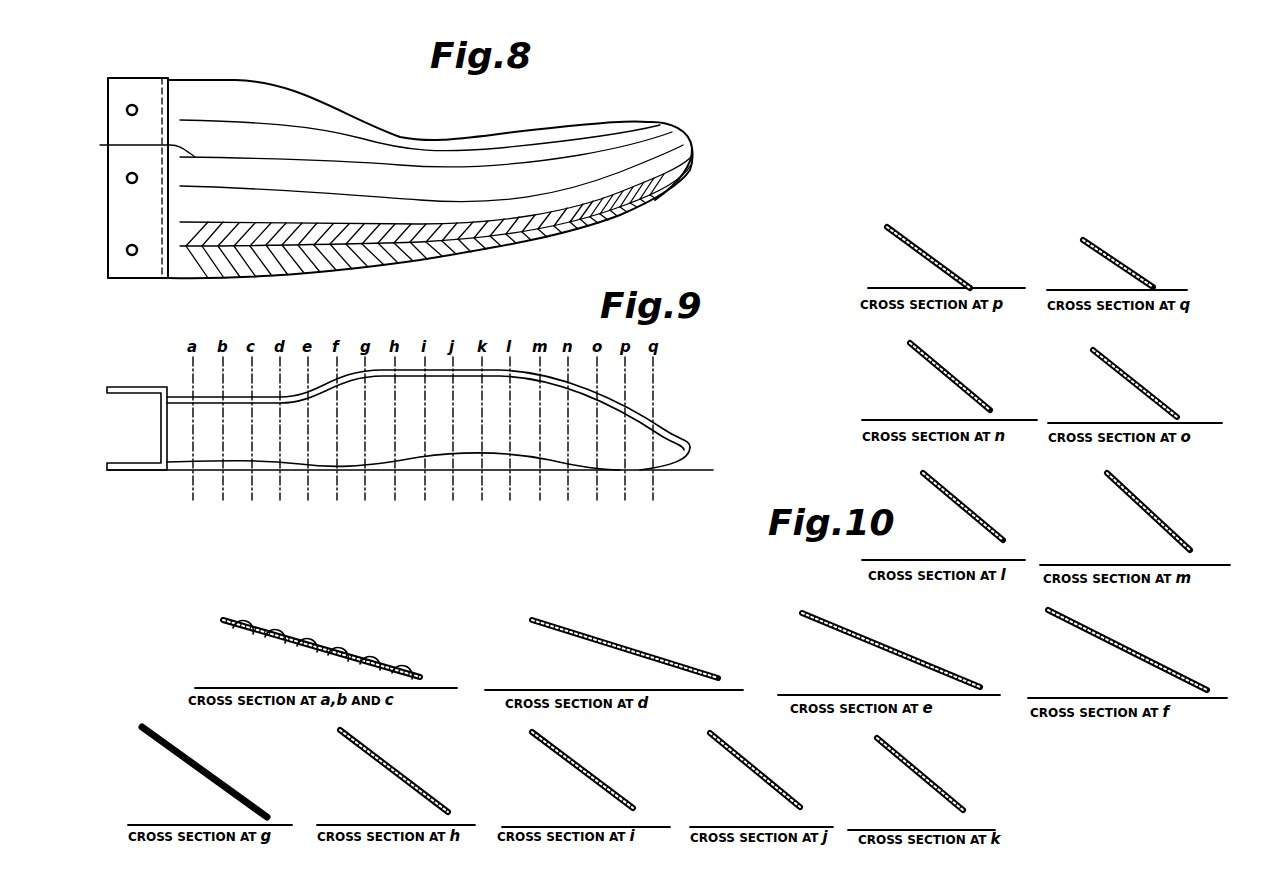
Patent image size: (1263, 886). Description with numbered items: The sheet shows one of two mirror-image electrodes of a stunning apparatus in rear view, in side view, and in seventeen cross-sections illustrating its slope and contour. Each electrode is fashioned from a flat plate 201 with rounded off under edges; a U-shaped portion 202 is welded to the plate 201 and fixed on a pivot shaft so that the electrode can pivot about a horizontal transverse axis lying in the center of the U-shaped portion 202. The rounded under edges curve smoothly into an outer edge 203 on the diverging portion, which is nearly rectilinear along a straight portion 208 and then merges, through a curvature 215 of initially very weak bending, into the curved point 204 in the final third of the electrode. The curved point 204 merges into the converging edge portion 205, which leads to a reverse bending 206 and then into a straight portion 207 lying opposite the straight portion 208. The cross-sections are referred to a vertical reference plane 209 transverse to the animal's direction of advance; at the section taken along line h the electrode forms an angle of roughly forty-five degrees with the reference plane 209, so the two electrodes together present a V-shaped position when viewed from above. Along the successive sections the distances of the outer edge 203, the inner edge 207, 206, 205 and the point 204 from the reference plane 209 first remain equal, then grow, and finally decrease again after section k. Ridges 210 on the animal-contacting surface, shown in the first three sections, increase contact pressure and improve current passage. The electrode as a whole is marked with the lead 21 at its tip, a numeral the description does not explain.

In FIG. 8, the shoe upper tip 21 is at (676, 128).
In FIG. 8, the upper layer 201 is at (355, 135).
In FIG. 9, the upper layer 201 is at (412, 428).
In FIG. 10, the upper layer 201 is at (300, 638).
In FIG. 8, the mounting bracket 202 is at (142, 93).
In FIG. 8, the lower edge 203 is at (372, 264).
In FIG. 9, the lower edge 203 is at (410, 372).
In FIG. 10, the lower edge 203 is at (1006, 540).
In FIG. 8, the toe cap portion 204 is at (640, 122).
In FIG. 9, the toe cap portion 204 is at (660, 428).
In FIG. 10, the toe cap portion 204 is at (886, 225).
In FIG. 8, the intermediate layer 205 is at (455, 140).
In FIG. 9, the intermediate layer 205 is at (470, 457).
In FIG. 10, the intermediate layer 205 is at (927, 472).
In FIG. 8, the second layer 206 is at (293, 90).
In FIG. 10, the second layer 206 is at (803, 612).
In FIG. 8, the top layer 207 is at (235, 79).
In FIG. 9, the top layer 207 is at (133, 386).
In FIG. 10, the top layer 207 is at (223, 618).
In FIG. 8, the bottom edge 208 is at (205, 279).
In FIG. 9, the bottom edge 208 is at (223, 397).
In FIG. 10, the bottom edge 208 is at (422, 677).
In FIG. 9, the base plane 209 is at (178, 472).
In FIG. 10, the base plane 209 is at (880, 288).
In FIG. 8, the rib 210 is at (363, 149).
In FIG. 10, the rib 210 is at (378, 650).
In FIG. 8, the hatched edge region 215 is at (593, 216).
In FIG. 9, the hatched edge region 215 is at (572, 390).
In FIG. 10, the hatched edge region 215 is at (992, 410).